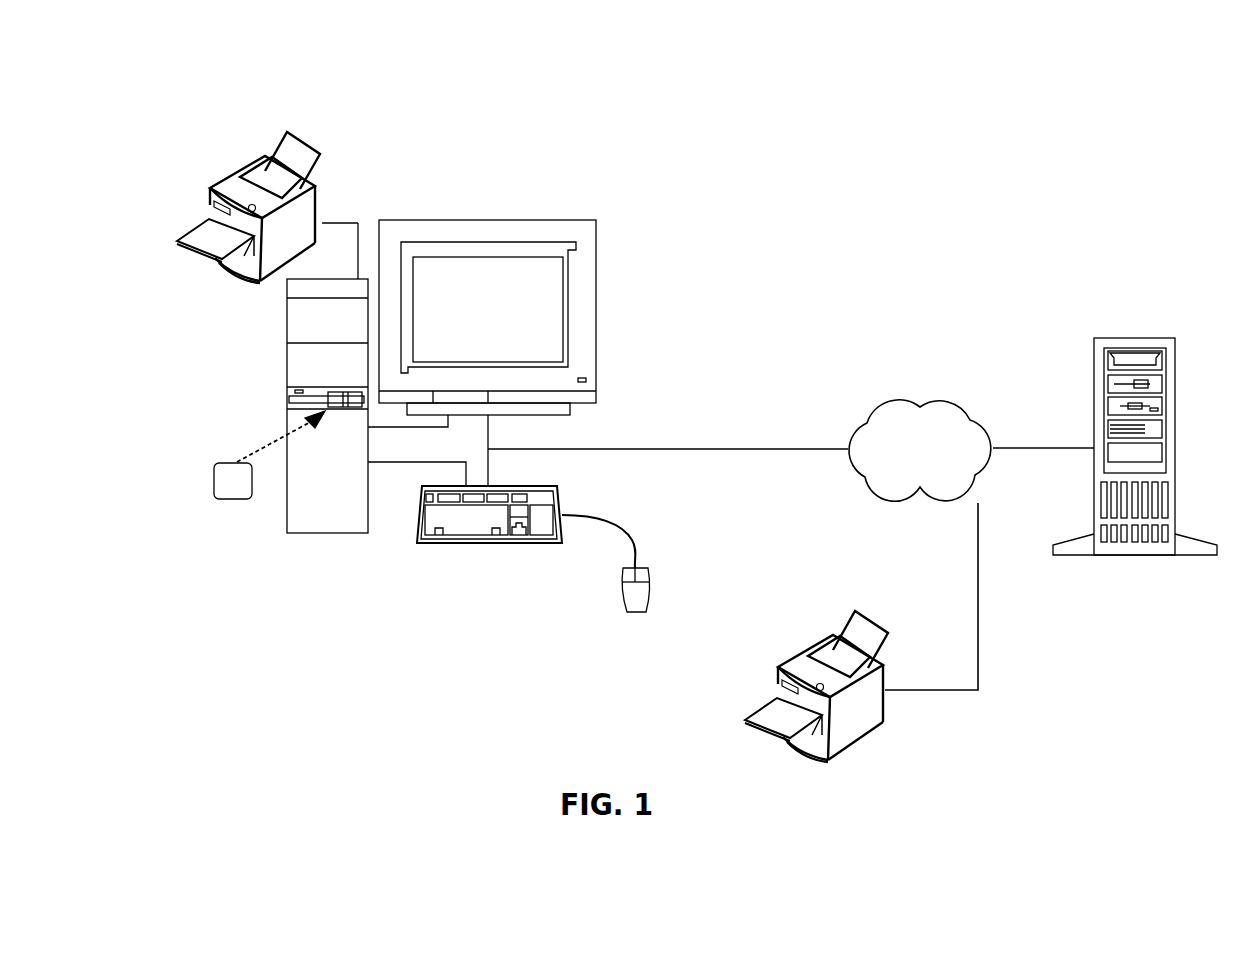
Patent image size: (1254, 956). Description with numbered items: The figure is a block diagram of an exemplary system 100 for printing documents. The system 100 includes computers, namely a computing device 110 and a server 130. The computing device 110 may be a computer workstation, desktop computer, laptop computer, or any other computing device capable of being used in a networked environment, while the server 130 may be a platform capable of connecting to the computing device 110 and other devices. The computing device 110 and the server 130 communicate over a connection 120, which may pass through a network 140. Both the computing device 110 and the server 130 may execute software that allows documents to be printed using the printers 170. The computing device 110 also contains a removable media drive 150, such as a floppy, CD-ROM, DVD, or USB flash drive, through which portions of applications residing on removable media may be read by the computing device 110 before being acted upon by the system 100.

The system 100 is at (338, 50).
The computing device 110 is at (468, 396).
The connection 120 is at (791, 557).
The server 130 is at (1135, 420).
The network 140 is at (938, 460).
The removable media drive 150 is at (269, 470).
The printers 170 is at (514, 447).